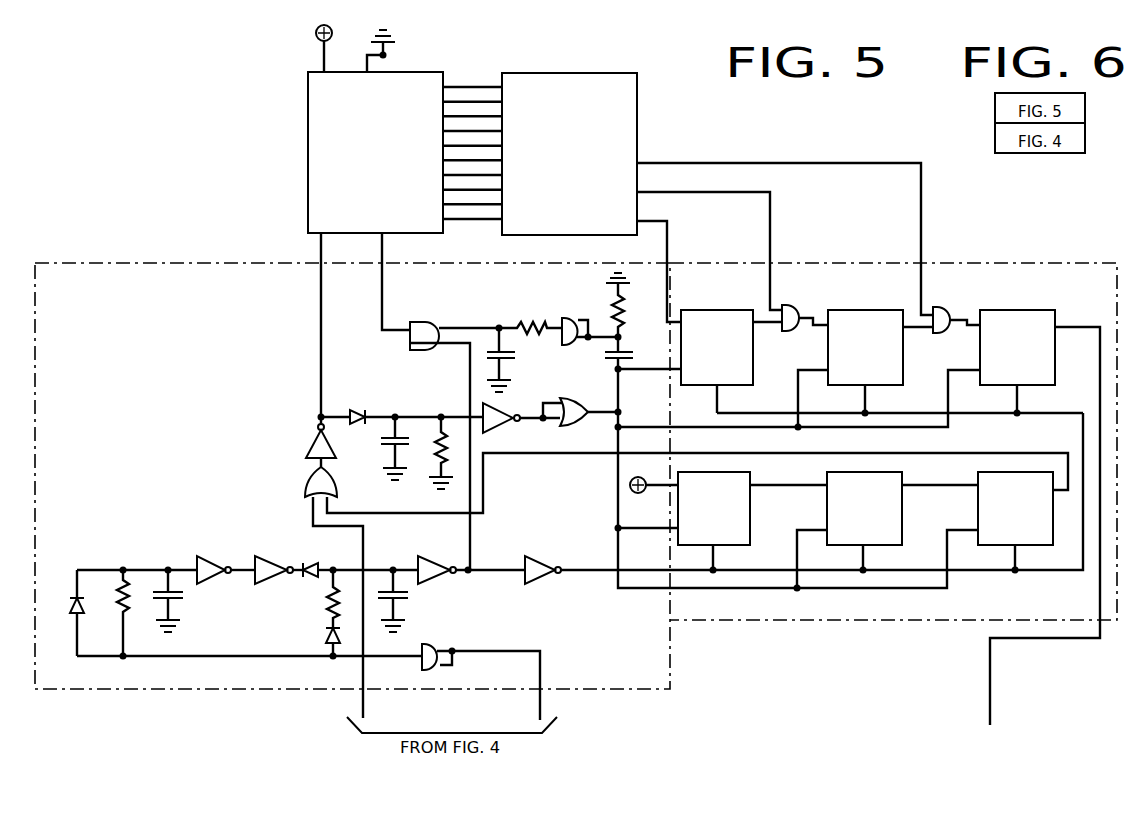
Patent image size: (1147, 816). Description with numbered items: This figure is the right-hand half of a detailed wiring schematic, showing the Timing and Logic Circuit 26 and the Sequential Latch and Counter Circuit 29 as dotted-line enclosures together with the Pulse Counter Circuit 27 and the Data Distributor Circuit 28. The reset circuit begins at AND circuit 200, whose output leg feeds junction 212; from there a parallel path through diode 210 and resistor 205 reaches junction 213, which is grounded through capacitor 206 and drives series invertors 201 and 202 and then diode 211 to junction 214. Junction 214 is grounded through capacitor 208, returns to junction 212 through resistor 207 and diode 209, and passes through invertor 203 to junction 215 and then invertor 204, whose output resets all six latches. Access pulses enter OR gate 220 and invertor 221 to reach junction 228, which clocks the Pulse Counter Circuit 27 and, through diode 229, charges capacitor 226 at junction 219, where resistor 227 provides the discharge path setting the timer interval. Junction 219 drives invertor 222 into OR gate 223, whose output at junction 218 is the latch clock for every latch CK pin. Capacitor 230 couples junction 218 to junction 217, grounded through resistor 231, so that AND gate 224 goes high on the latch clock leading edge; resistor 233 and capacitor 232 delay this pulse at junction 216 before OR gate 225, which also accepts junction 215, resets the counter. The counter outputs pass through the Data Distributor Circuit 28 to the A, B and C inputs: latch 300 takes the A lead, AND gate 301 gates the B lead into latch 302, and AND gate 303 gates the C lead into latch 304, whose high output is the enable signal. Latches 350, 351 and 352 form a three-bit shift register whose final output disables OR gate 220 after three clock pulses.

The Timing and Logic Circuit 26 is at (130, 263).
The Pulse Counter Circuit 27 is at (308, 108).
The Data Distributor Circuit 28 is at (637, 113).
The Sequential Latch and Counter Circuit 29 is at (1070, 264).
The AND circuit 200 is at (472, 671).
The invertor 201 is at (222, 560).
The invertor 202 is at (276, 560).
The invertor 203 is at (468, 560).
The invertor 204 is at (800, 498).
The resistor 205 is at (103, 613).
The capacitor 206 is at (184, 601).
The resistor 207 is at (317, 599).
The capacitor 208 is at (408, 600).
The diode 209 is at (317, 642).
The diode 210 is at (60, 613).
The diode 211 is at (314, 559).
The junction 212 is at (238, 657).
The junction 213 is at (168, 565).
The junction 214 is at (336, 568).
The junction 215 is at (470, 574).
The junction 216 is at (499, 326).
The junction 217 is at (622, 337).
The junction 218 is at (620, 371).
The junction 219 is at (425, 414).
The OR gate 220 is at (665, 585).
The invertor 221 is at (302, 437).
The invertor 222 is at (492, 427).
The OR gate 223 is at (570, 411).
The AND gate 224 is at (590, 321).
The OR gate 225 is at (448, 435).
The capacitor 226 is at (386, 447).
The resistor 227 is at (449, 453).
The junction 228 is at (316, 416).
The diode 229 is at (358, 404).
The capacitor 230 is at (608, 360).
The resistor 231 is at (633, 307).
The capacitor 232 is at (518, 360).
The resistor 233 is at (530, 316).
The D-type latch 300 is at (716, 310).
The AND gate 301 is at (799, 314).
The D-type latch 302 is at (862, 310).
The AND gate 303 is at (952, 314).
The D-type latch 304 is at (1014, 310).
The D-type latch 350 is at (752, 525).
The D-type latch 351 is at (905, 525).
The D-type latch 352 is at (1028, 472).